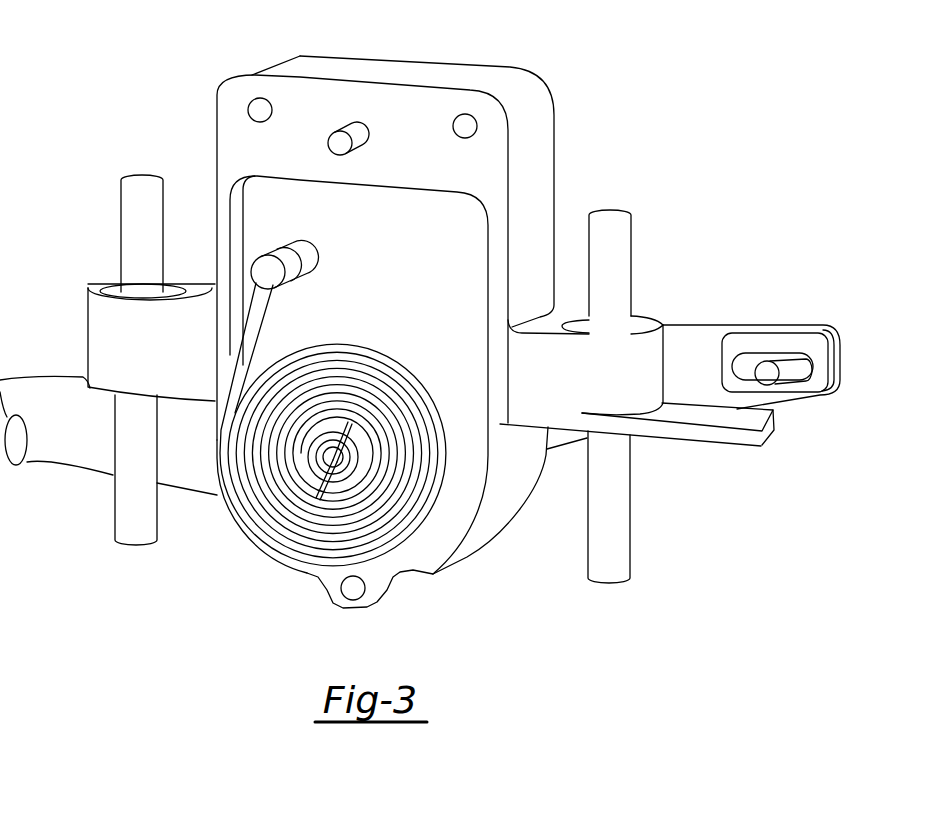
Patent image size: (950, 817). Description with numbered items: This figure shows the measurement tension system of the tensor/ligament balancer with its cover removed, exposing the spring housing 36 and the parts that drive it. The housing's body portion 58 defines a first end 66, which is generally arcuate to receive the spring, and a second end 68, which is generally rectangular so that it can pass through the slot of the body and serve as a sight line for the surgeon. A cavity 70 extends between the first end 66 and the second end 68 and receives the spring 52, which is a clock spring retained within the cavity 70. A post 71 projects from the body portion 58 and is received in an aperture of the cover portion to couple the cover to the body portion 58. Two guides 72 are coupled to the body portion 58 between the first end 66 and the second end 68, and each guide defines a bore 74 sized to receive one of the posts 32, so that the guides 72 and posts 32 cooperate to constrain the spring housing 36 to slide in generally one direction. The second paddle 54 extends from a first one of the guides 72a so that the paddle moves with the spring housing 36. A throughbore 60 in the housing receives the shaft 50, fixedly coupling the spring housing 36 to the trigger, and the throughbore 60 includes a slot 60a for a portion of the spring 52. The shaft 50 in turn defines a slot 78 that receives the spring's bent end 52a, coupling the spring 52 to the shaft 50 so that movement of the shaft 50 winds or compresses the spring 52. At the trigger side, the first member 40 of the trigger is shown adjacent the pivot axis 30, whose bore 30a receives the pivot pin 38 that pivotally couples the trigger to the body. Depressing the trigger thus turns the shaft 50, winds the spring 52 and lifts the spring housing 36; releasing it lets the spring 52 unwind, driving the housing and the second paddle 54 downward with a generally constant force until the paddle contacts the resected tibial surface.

The pivot axis 30 is at (846, 350).
The bore 30a is at (797, 380).
The posts 32 is at (122, 527).
The spring housing 36 is at (458, 62).
The pivot pin 38 is at (784, 362).
The first member 40 is at (714, 338).
The shaft 50 is at (333, 472).
The spring 52 is at (254, 559).
The bent end 52a is at (322, 480).
The second paddle 54 is at (707, 437).
The body portion 58 is at (212, 145).
The throughbore 60 is at (382, 480).
The slot 60a is at (345, 428).
The first end 66 is at (428, 571).
The second end 68 is at (525, 102).
The cavity 70 is at (452, 232).
The post 71 is at (344, 131).
The guides 72 is at (103, 342).
The first one of the guides 72a is at (652, 353).
The bore 74 is at (109, 292).
The slot 78 is at (322, 474).